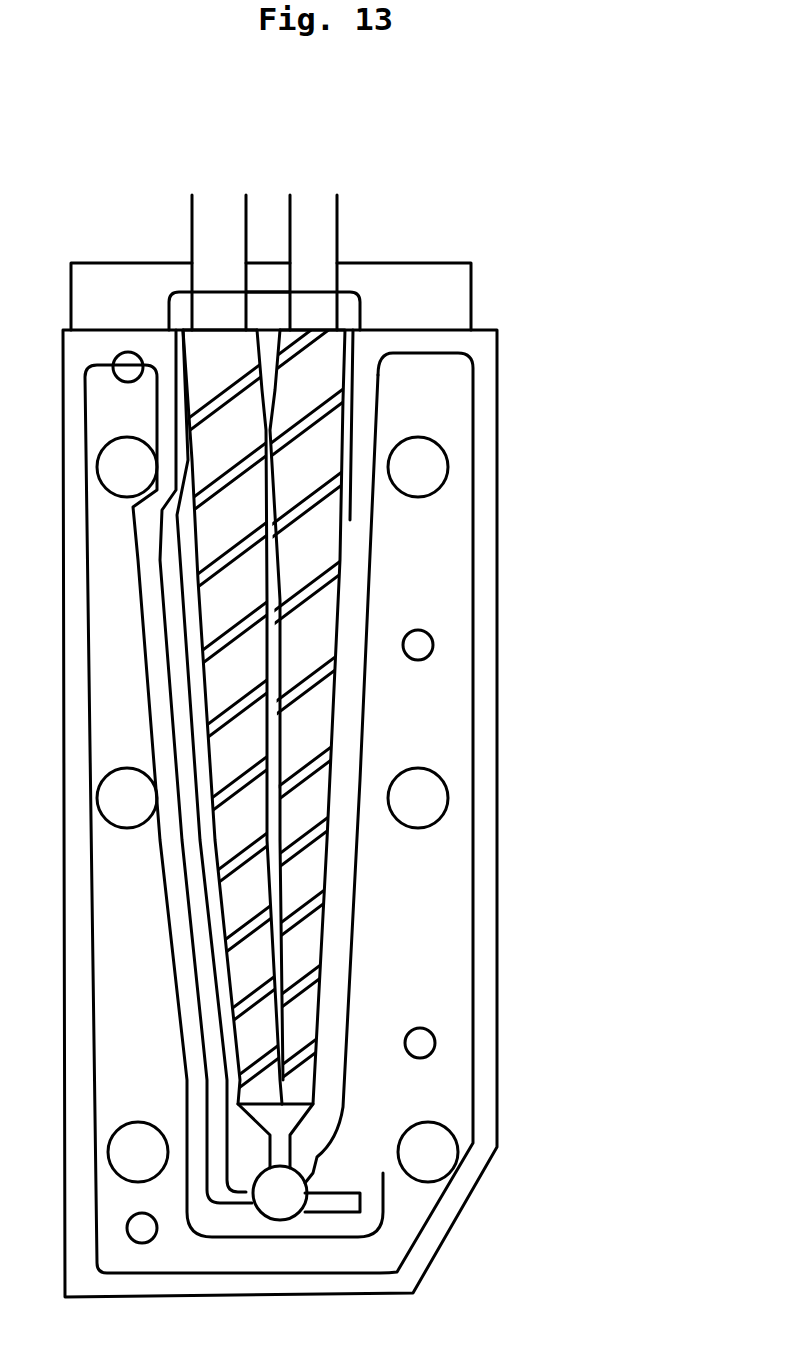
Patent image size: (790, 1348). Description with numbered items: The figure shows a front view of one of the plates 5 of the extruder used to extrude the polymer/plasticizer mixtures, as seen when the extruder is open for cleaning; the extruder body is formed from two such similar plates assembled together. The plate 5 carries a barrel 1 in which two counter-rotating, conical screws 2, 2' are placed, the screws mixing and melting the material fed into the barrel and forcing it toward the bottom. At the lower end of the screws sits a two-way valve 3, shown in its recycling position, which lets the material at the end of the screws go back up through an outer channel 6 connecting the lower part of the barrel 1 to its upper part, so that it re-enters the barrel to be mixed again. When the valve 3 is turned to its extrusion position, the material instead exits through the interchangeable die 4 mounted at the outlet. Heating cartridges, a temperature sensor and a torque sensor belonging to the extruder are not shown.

The barrel 1 is at (281, 400).
The conical screw 2 is at (467, 692).
The conical screw 2' is at (429, 716).
The two-way valve 3 is at (314, 1170).
The interchangeable die 4 is at (381, 1203).
The plate 5 is at (512, 353).
The channel 6 is at (201, 663).